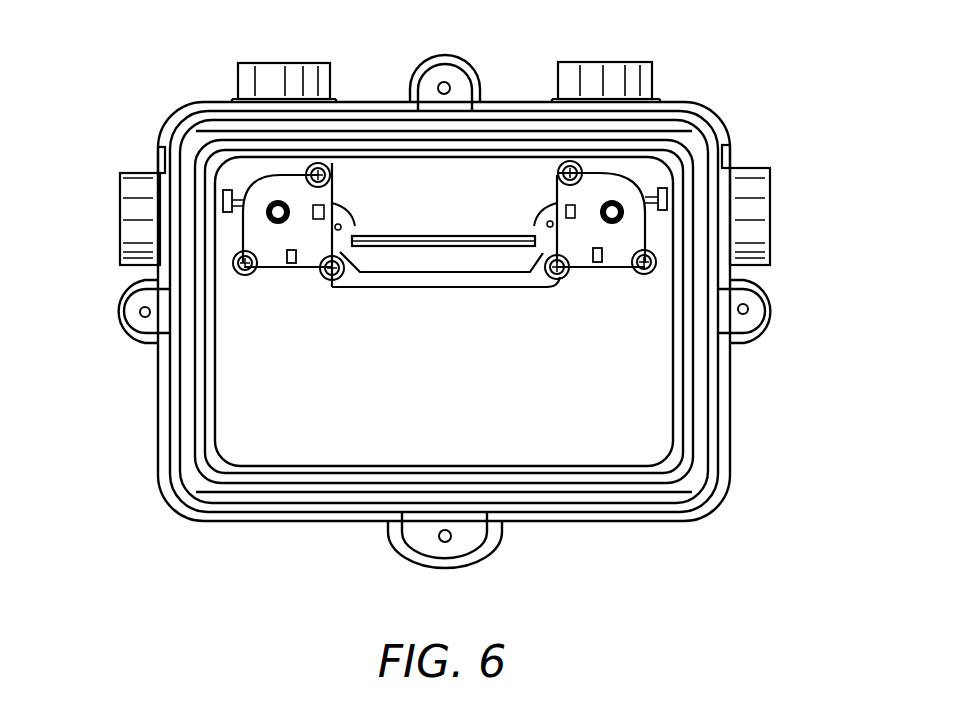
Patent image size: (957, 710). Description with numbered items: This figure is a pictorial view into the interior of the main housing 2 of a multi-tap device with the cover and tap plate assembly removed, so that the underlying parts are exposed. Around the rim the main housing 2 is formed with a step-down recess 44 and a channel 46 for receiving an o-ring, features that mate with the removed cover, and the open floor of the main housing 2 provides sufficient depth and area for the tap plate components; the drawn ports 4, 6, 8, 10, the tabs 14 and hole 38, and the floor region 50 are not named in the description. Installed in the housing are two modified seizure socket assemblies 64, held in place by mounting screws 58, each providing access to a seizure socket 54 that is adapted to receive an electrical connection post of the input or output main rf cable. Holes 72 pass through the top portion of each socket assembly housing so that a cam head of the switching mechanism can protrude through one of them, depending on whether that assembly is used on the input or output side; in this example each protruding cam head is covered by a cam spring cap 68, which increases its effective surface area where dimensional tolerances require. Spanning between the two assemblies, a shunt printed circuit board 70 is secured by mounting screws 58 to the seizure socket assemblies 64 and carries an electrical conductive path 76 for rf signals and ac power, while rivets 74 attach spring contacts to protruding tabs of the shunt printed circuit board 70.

The main housing 2 is at (708, 113).
The connector port 4 is at (138, 172).
The connector port 6 is at (747, 170).
The connector port 8 is at (237, 79).
The connector port 10 is at (652, 74).
The mounting tab 14 is at (473, 72).
The mounting hole 38 is at (752, 307).
The step-down recess 44 is at (702, 424).
The channel 46 is at (690, 391).
The base plate 50 is at (237, 421).
The seizure socket 54 is at (275, 203).
The mounting screw 58 is at (333, 173).
The seizure socket assembly 64 is at (342, 186).
The cam spring cap 68 is at (344, 205).
The shunt printed circuit board 70 is at (420, 290).
The hole 72 is at (297, 268).
The rivet 74 is at (340, 228).
The electrical conductive path 76 is at (443, 262).